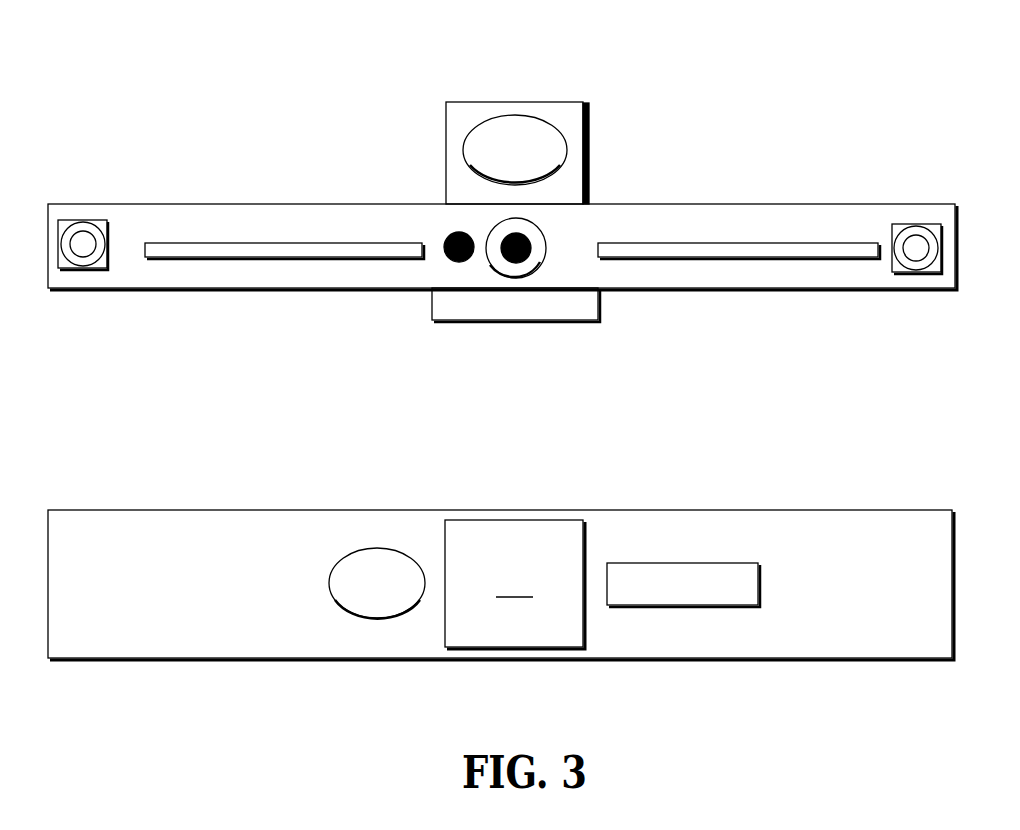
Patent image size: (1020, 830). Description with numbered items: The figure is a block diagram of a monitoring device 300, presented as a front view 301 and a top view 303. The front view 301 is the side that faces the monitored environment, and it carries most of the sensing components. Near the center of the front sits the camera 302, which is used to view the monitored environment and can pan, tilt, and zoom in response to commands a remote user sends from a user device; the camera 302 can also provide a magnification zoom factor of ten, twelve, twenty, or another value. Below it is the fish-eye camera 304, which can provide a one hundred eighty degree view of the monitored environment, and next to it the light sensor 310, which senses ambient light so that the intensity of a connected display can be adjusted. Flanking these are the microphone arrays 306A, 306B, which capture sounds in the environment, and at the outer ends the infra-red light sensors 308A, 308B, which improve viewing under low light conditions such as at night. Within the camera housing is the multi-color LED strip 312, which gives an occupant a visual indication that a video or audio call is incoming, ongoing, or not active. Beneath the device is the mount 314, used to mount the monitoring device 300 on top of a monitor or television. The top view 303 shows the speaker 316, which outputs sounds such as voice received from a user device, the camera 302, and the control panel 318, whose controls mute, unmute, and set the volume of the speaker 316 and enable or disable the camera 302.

The monitoring device 300 is at (100, 119).
The front view 301 is at (240, 166).
The camera 302 is at (482, 103).
The top view 303 is at (248, 499).
The fish-eye camera 304 is at (538, 228).
The microphone array 306A is at (178, 242).
The microphone array 306B is at (699, 243).
The infra-red light sensor 308A is at (70, 268).
The infra-red light sensor 308B is at (905, 272).
The light sensor 310 is at (445, 256).
The multi-color LED strip 312 is at (560, 170).
The mount 314 is at (482, 322).
The speaker 316 is at (370, 548).
The control panel 318 is at (660, 563).